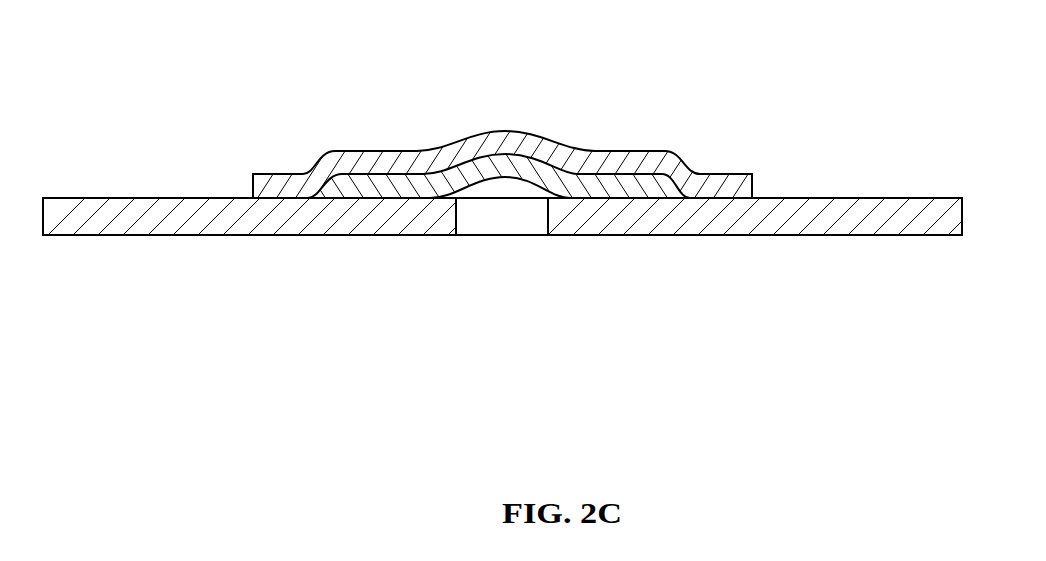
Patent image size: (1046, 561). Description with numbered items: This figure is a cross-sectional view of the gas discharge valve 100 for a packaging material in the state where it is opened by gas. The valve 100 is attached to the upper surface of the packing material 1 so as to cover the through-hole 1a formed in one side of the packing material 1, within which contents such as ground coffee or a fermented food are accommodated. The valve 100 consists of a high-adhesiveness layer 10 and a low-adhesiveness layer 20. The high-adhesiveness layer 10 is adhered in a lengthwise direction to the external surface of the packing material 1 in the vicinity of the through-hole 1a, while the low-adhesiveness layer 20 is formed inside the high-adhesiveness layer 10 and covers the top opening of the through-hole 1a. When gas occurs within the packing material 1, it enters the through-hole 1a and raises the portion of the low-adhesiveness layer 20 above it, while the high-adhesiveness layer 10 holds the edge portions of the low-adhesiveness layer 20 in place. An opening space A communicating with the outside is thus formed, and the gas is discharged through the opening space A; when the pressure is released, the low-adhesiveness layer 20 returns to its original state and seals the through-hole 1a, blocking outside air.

The packing material 1 is at (925, 223).
The through-hole 1a is at (510, 219).
The high-adhesiveness layer 10 is at (728, 188).
The low-adhesiveness layer 20 is at (370, 187).
The gas discharge valve 100 is at (715, 156).
The opening space A is at (503, 193).